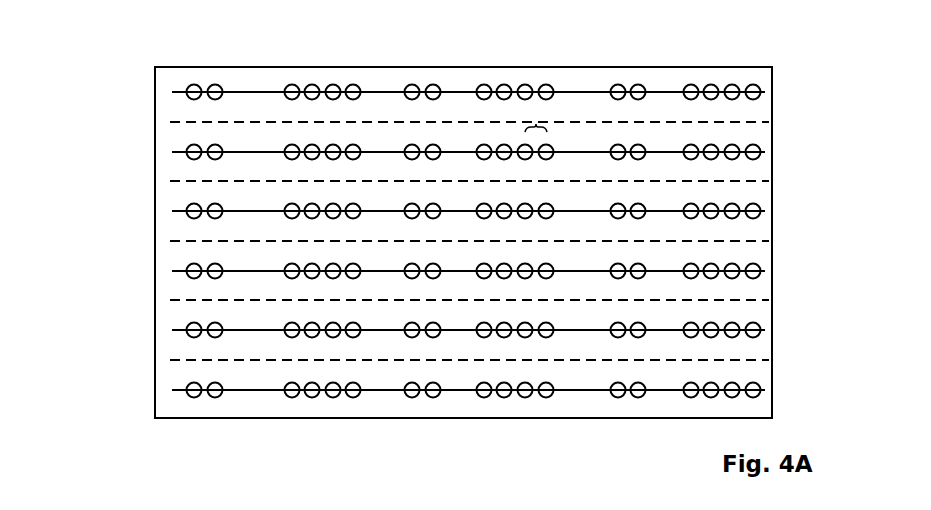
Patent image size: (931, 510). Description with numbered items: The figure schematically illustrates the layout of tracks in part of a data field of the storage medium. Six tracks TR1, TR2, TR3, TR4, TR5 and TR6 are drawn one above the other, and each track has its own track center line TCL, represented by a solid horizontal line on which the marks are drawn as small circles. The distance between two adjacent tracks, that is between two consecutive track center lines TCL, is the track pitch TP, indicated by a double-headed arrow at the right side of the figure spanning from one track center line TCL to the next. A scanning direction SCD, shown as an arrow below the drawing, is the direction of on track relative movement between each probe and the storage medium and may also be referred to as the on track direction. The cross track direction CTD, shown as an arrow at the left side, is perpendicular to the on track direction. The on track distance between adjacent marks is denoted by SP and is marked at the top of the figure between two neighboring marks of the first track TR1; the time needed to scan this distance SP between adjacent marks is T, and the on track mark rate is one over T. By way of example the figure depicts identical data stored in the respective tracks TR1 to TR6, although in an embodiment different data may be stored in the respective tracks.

The track TR1 is at (146, 68).
The track TR2 is at (146, 128).
The track TR3 is at (146, 187).
The track TR4 is at (146, 247).
The track TR5 is at (146, 306).
The track TR6 is at (146, 366).
The track center line TCL is at (228, 93).
The on track distance between adjacent marks SP is at (433, 86).
The track pitch TP is at (792, 89).
The cross track direction CTD is at (62, 362).
The scanning direction SCD is at (242, 450).